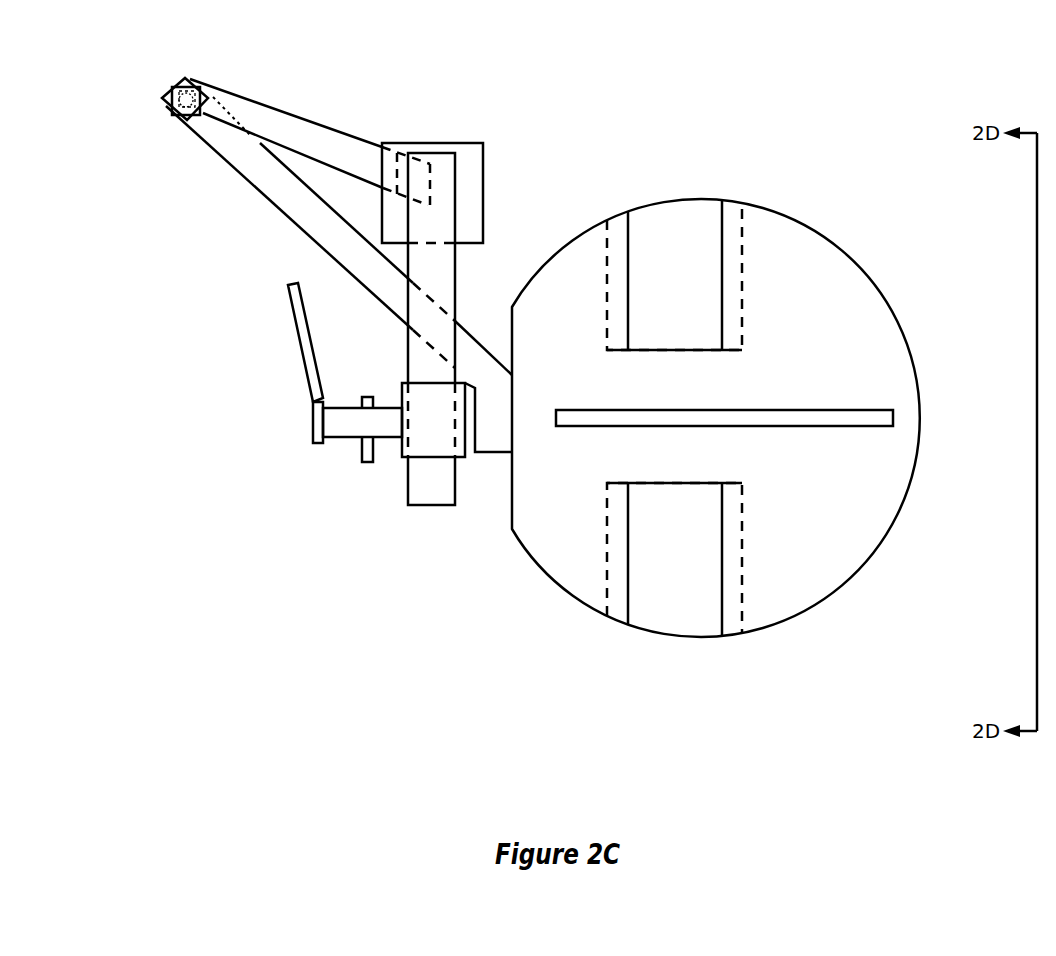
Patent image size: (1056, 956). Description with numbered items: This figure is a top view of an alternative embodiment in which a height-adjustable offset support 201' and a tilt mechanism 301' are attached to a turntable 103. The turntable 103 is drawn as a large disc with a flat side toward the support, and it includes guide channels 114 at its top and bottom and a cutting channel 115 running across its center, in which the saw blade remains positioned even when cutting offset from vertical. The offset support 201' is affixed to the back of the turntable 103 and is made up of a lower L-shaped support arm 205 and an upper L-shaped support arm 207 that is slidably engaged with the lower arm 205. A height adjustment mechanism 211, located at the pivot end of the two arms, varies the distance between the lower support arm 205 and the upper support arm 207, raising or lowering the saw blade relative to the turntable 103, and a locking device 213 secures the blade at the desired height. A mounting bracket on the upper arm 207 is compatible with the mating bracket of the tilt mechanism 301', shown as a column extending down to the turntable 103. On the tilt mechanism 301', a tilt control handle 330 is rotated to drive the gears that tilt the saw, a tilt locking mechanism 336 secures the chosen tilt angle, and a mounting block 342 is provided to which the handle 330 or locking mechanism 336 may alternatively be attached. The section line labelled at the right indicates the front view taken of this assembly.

The turntable 103 is at (878, 290).
The guide channels 114 is at (675, 200).
The cutting channel 115 is at (777, 410).
The height-adjustable offset support 201' is at (319, 270).
The locking device 213 is at (176, 86).
The height adjustment mechanism 211 is at (206, 88).
The upper L-shaped support arm 207 is at (300, 116).
The lower L-shaped support arm 205 is at (240, 174).
The tilt mechanism 301' is at (480, 329).
The tilt control handle 330 is at (298, 328).
The tilt locking mechanism 336 is at (362, 449).
The mounting block 342 is at (405, 457).